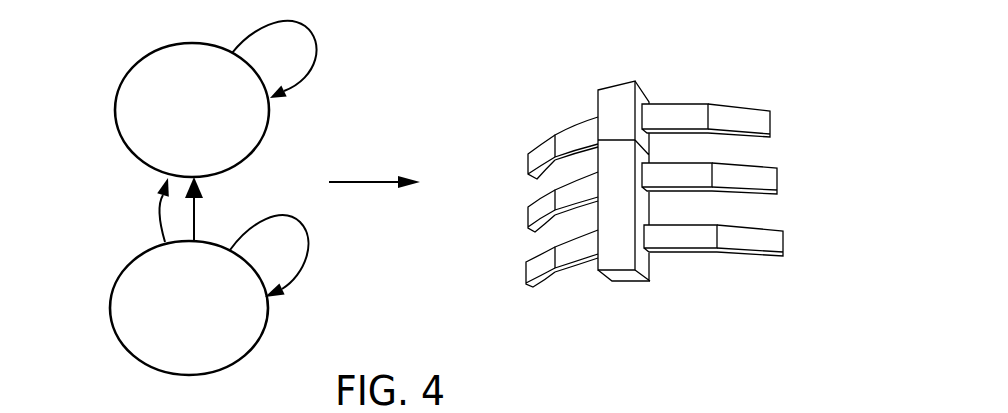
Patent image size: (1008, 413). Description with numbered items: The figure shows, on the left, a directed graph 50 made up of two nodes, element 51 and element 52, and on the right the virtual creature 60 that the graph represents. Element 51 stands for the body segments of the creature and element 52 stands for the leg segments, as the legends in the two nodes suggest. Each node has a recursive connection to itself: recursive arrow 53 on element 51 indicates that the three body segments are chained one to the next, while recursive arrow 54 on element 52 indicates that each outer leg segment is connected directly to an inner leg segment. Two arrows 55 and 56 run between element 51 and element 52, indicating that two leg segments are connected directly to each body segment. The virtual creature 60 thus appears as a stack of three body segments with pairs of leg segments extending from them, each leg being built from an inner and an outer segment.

The directed graph 50 is at (88, 315).
The element 51 is at (233, 367).
The element 52 is at (262, 147).
The recursive arrow 53 is at (307, 230).
The recursive arrow 54 is at (307, 18).
The arrow 55 is at (197, 218).
The arrow 56 is at (158, 221).
The virtual creature 60 is at (510, 310).